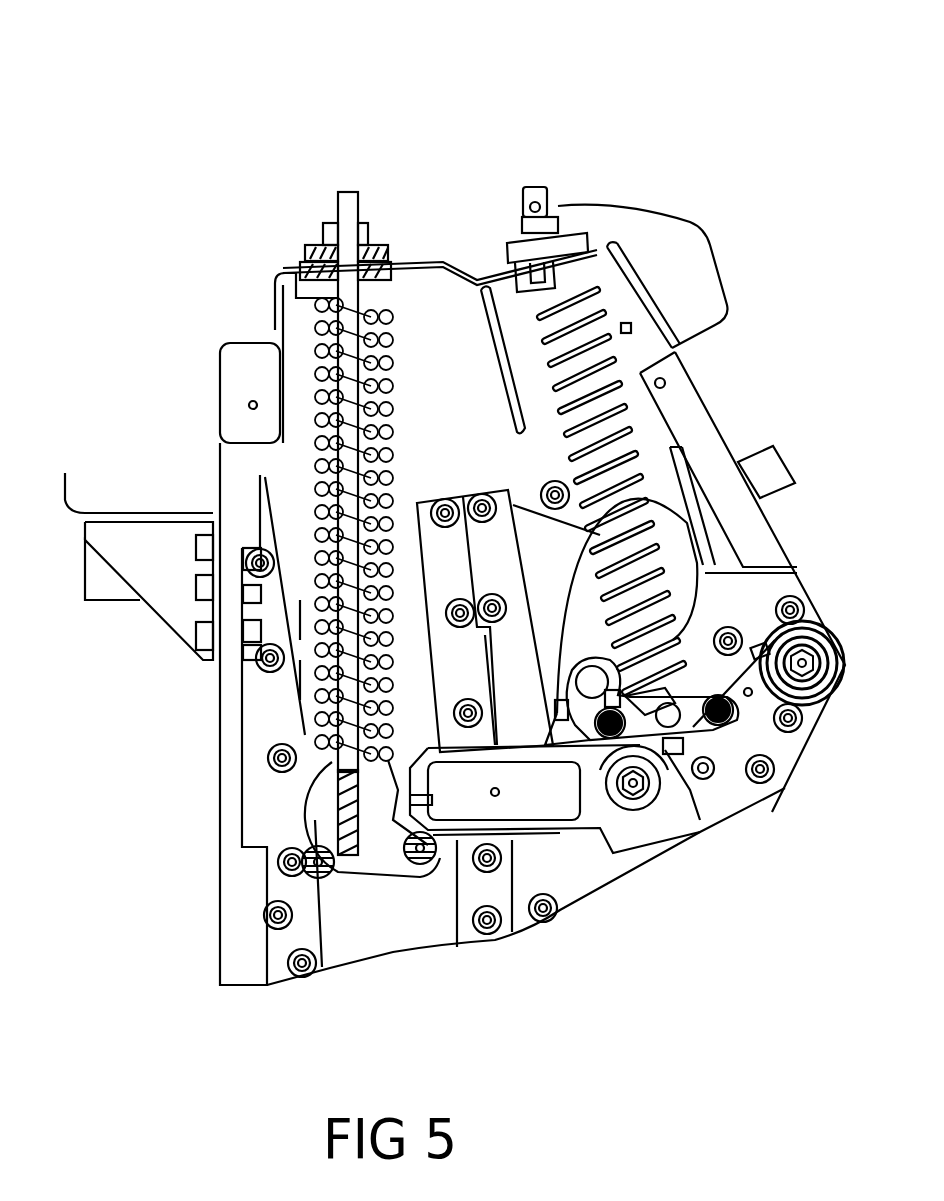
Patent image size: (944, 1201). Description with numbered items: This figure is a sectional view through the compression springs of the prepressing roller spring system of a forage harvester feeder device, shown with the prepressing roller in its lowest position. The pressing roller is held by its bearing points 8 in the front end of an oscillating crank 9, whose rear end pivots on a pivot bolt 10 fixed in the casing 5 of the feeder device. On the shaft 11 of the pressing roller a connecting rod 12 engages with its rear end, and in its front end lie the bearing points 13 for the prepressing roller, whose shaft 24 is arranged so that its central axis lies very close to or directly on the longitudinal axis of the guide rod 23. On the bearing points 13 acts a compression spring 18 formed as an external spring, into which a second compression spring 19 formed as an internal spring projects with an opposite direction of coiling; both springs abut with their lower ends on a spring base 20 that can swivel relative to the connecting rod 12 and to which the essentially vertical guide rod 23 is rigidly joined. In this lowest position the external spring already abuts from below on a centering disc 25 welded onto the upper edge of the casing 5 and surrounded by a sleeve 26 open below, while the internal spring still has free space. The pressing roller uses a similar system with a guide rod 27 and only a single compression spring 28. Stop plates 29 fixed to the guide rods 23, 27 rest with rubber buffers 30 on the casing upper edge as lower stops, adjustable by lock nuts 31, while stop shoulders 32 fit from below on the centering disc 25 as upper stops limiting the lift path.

The casing 5 is at (327, 392).
The bearing points 8 is at (547, 892).
The oscillating crank 9 is at (748, 696).
The pivot bolt 10 is at (802, 667).
The shaft 11 is at (632, 786).
The connecting rod 12 is at (495, 796).
The bearing points 13 is at (225, 894).
The compression spring 18 is at (325, 585).
The second compression spring 19 is at (340, 662).
The spring base 20 is at (342, 795).
The guide rod 23 is at (345, 672).
The shaft 24 is at (345, 850).
The centering disc 25 is at (298, 268).
The sleeve 26 is at (277, 290).
The guide rod 27 is at (552, 209).
The compression spring 28 is at (560, 385).
The stop plate 29 is at (333, 233).
The rubber buffer 30 is at (305, 252).
The lock nut 31 is at (337, 195).
The stop shoulder 32 is at (345, 478).